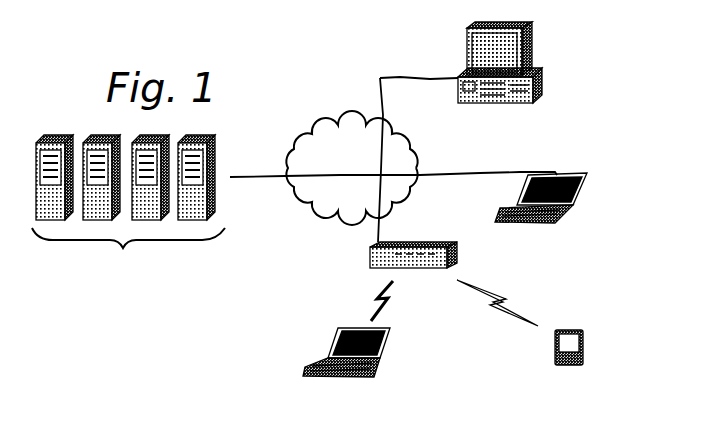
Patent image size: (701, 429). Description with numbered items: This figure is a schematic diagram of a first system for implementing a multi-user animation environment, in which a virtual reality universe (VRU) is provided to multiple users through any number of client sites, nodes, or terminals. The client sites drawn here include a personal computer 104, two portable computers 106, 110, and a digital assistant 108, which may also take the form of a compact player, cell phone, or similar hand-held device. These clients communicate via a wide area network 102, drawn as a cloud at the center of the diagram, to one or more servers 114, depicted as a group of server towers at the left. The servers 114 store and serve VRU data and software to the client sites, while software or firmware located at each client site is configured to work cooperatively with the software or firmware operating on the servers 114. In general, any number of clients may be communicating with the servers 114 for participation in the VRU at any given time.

The wide area network 102 is at (350, 167).
The personal computer 104 is at (537, 50).
The portable computer 106 is at (577, 192).
The digital assistant 108 is at (588, 341).
The portable computer 110 is at (357, 380).
The servers 114 is at (128, 208).